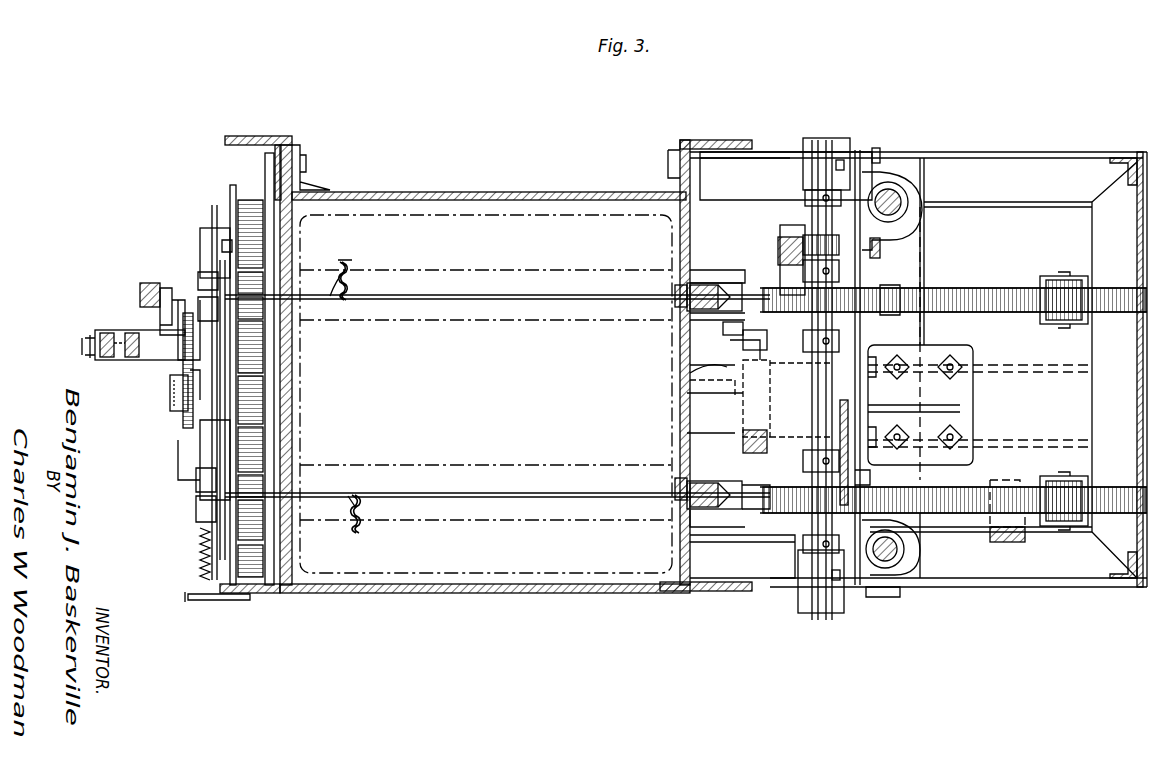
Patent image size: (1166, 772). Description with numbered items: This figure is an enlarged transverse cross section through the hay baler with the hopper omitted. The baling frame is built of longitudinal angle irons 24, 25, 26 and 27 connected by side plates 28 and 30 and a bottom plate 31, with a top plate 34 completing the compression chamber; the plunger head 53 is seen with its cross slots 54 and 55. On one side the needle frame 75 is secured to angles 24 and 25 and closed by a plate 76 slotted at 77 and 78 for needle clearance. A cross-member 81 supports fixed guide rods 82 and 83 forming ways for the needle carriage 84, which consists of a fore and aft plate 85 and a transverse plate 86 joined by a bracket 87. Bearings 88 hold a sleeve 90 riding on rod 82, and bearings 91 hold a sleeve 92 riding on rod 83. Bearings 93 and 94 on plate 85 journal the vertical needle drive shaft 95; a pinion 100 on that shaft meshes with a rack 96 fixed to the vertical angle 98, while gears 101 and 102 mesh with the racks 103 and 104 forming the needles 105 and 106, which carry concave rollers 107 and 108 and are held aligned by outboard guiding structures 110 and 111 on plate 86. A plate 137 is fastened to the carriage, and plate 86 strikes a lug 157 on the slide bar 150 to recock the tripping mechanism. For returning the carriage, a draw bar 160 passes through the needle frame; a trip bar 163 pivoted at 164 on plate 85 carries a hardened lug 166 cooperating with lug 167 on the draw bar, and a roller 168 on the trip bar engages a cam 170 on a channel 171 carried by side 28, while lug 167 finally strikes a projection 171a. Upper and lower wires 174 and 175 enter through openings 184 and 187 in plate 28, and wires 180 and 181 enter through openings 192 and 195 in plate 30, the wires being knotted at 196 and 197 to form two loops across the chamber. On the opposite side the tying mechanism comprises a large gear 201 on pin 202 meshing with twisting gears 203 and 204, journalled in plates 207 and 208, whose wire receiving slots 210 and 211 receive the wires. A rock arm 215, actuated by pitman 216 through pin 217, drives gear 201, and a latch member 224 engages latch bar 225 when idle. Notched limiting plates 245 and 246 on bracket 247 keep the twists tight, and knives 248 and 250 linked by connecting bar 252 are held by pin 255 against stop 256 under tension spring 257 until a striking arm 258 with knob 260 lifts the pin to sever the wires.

The longitudinal angle iron 24 is at (708, 140).
The longitudinal angle iron 25 is at (690, 592).
The longitudinal angle iron 26 is at (265, 598).
The longitudinal angle iron 27 is at (246, 136).
The side plate 28 is at (690, 233).
The side plate 30 is at (300, 226).
The bottom plate 31 is at (485, 594).
The top plate 34 is at (520, 194).
The plunger head 53 is at (438, 212).
The cross slot 54 is at (460, 320).
The cross slot 55 is at (445, 465).
The needle frame 75 is at (990, 145).
The plate 76 is at (1100, 190).
The slot 77 is at (1135, 288).
The slot 78 is at (1135, 488).
The cross-member 81 is at (925, 170).
The upper guide rod 82 is at (905, 200).
The lower guide rod 83 is at (890, 560).
The needle carriage 84 is at (978, 284).
The fore and aft extending plate 85 is at (862, 270).
The second plate 86 is at (1012, 330).
The bracket 87 is at (940, 385).
The bearing 88 is at (890, 180).
The sleeve 90 is at (905, 220).
The bearing 91 is at (905, 558).
The sleeve 92 is at (898, 545).
The bearing 93 is at (818, 140).
The bearing 94 is at (820, 605).
The needle drive shaft 95 is at (815, 215).
The rack 96 is at (788, 236).
The vertical angle 98 is at (790, 275).
The pinion 100 is at (882, 246).
The gear 101 is at (900, 318).
The gear 102 is at (790, 500).
The rack 103 is at (940, 290).
The rack 104 is at (962, 495).
The needle 105 is at (712, 267).
The needle 106 is at (708, 468).
The roller 107 is at (690, 288).
The roller 108 is at (680, 522).
The outboard guiding structure 110 is at (1052, 276).
The outboard guiding structure 111 is at (1052, 526).
The plate 137 is at (866, 465).
The slide bar 150 is at (1000, 542).
The lug 157 is at (1020, 476).
The draw bar 160 is at (752, 448).
The trip bar 163 is at (690, 336).
The pivot 164 is at (722, 270).
The hardened lug 166 is at (750, 352).
The lug 167 is at (760, 375).
The roller 168 is at (738, 332).
The cam 170 is at (700, 368).
The channel 171 is at (717, 405).
The projection 171a is at (742, 355).
The upper wire 174 is at (520, 296).
The lower wire 175 is at (480, 493).
The upper wire 180 is at (348, 285).
The lower wire 181 is at (358, 494).
The opening 184 is at (700, 318).
The opening 187 is at (700, 480).
The opening 192 is at (290, 322).
The opening 195 is at (298, 478).
The knot 196 is at (350, 282).
The knot 197 is at (362, 520).
The large gear 201 is at (300, 356).
The pin 202 is at (172, 385).
The wire twisting gear 203 is at (263, 262).
The wire twisting gear 204 is at (290, 450).
The plate 207 is at (230, 190).
The plate 208 is at (266, 165).
The wire receiving slot 210 is at (300, 308).
The wire receiving slot 211 is at (263, 480).
The rock arm 215 is at (185, 350).
The pitman 216 is at (118, 332).
The pin 217 is at (82, 347).
The latch member 224 is at (165, 288).
The latch bar 225 is at (140, 293).
The notched limiting plate 245 is at (200, 288).
The notched limiting plate 246 is at (205, 522).
The bracket 247 is at (214, 262).
The knife 248 is at (228, 270).
The knife 250 is at (222, 468).
The connecting bar 252 is at (202, 440).
The pin 255 is at (195, 392).
The stop 256 is at (297, 394).
The tension spring 257 is at (196, 592).
The striking arm 258 is at (178, 478).
The striking knob 260 is at (190, 498).